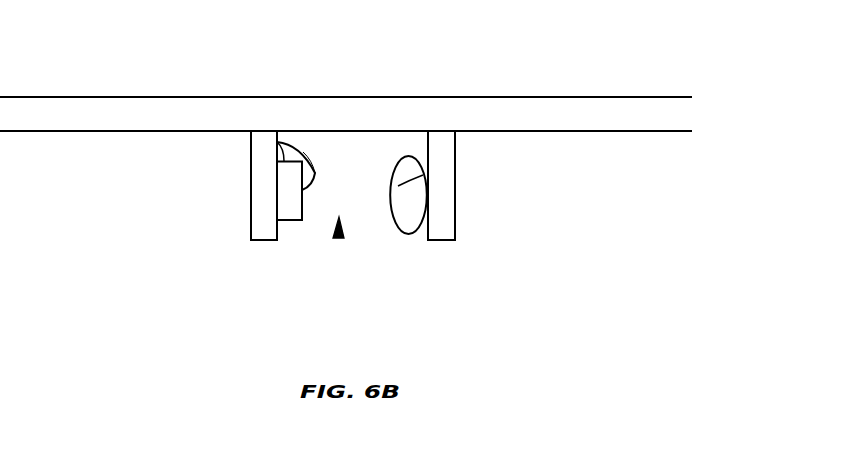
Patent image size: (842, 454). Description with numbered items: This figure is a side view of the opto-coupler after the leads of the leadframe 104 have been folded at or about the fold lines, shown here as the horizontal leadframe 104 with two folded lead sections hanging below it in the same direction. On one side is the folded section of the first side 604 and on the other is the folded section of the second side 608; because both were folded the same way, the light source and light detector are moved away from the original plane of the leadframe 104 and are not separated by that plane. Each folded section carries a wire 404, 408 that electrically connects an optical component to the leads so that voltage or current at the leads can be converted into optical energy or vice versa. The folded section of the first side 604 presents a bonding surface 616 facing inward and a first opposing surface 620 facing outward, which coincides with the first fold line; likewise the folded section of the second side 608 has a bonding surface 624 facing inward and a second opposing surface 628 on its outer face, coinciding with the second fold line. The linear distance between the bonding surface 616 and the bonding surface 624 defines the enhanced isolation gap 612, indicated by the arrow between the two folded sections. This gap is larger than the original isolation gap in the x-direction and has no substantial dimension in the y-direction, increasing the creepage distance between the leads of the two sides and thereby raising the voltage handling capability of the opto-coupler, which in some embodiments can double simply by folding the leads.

The leadframe 104 is at (660, 97).
The wire 404 is at (410, 177).
The wire 408 is at (320, 150).
The folded section of the first side 604 is at (442, 242).
The folded section of the second side 608 is at (262, 242).
The enhanced isolation gap 612 is at (336, 236).
The bonding surface of the folded section of the first side 616 is at (428, 145).
The first opposing surface 620 is at (457, 182).
The bonding surface of the folded section of the second side 624 is at (277, 141).
The second opposing surface 628 is at (250, 180).